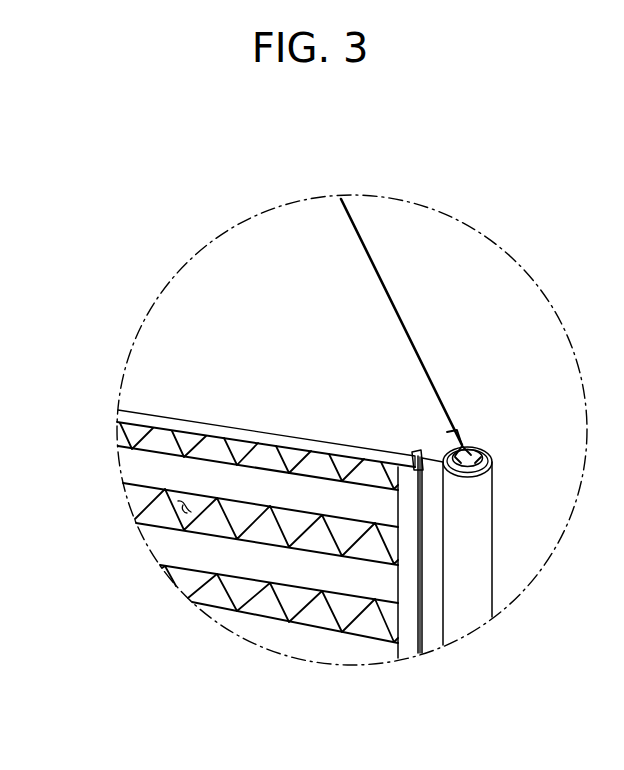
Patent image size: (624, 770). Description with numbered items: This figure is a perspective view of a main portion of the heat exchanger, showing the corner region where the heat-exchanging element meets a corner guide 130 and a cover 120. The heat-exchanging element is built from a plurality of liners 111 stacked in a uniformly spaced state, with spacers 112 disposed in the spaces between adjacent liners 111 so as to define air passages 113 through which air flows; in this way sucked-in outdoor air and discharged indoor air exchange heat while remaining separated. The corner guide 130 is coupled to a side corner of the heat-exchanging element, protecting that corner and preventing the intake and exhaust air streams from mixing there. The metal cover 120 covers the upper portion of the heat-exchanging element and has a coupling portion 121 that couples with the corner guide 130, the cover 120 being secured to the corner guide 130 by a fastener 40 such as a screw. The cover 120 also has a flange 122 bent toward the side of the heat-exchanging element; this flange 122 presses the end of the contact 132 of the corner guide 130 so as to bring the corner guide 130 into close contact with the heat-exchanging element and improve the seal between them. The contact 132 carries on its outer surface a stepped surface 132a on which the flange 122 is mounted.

The fastener 40 is at (462, 446).
The liner 111 is at (254, 582).
The spacer 112 is at (311, 616).
The air passage 113 is at (177, 515).
The cover 120 is at (384, 326).
The coupling portion 121 is at (490, 453).
The flange 122 is at (129, 424).
The corner guide 130 is at (473, 531).
The contact 132 is at (432, 642).
The stepped surface 132a is at (408, 648).